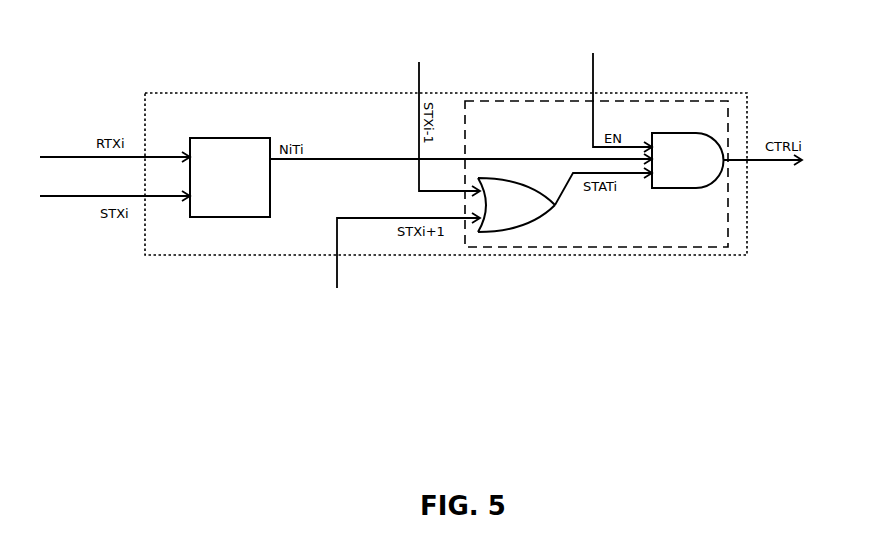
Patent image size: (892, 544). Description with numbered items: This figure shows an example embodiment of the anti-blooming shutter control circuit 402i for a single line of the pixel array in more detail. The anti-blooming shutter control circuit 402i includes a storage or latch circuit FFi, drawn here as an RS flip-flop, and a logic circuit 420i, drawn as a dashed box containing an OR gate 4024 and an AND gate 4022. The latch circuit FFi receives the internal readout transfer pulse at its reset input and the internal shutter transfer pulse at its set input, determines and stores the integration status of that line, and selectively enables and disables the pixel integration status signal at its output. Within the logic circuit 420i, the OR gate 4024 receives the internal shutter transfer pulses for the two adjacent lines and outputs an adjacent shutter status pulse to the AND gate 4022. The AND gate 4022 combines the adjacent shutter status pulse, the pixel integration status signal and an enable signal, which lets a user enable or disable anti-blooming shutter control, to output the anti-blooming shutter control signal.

The anti-blooming shutter control circuit 402i is at (747, 93).
The logic circuit 420i is at (465, 100).
The storage circuit FFi is at (230, 177).
The OR gate 4024 is at (516, 205).
The AND gate 4022 is at (687, 160).